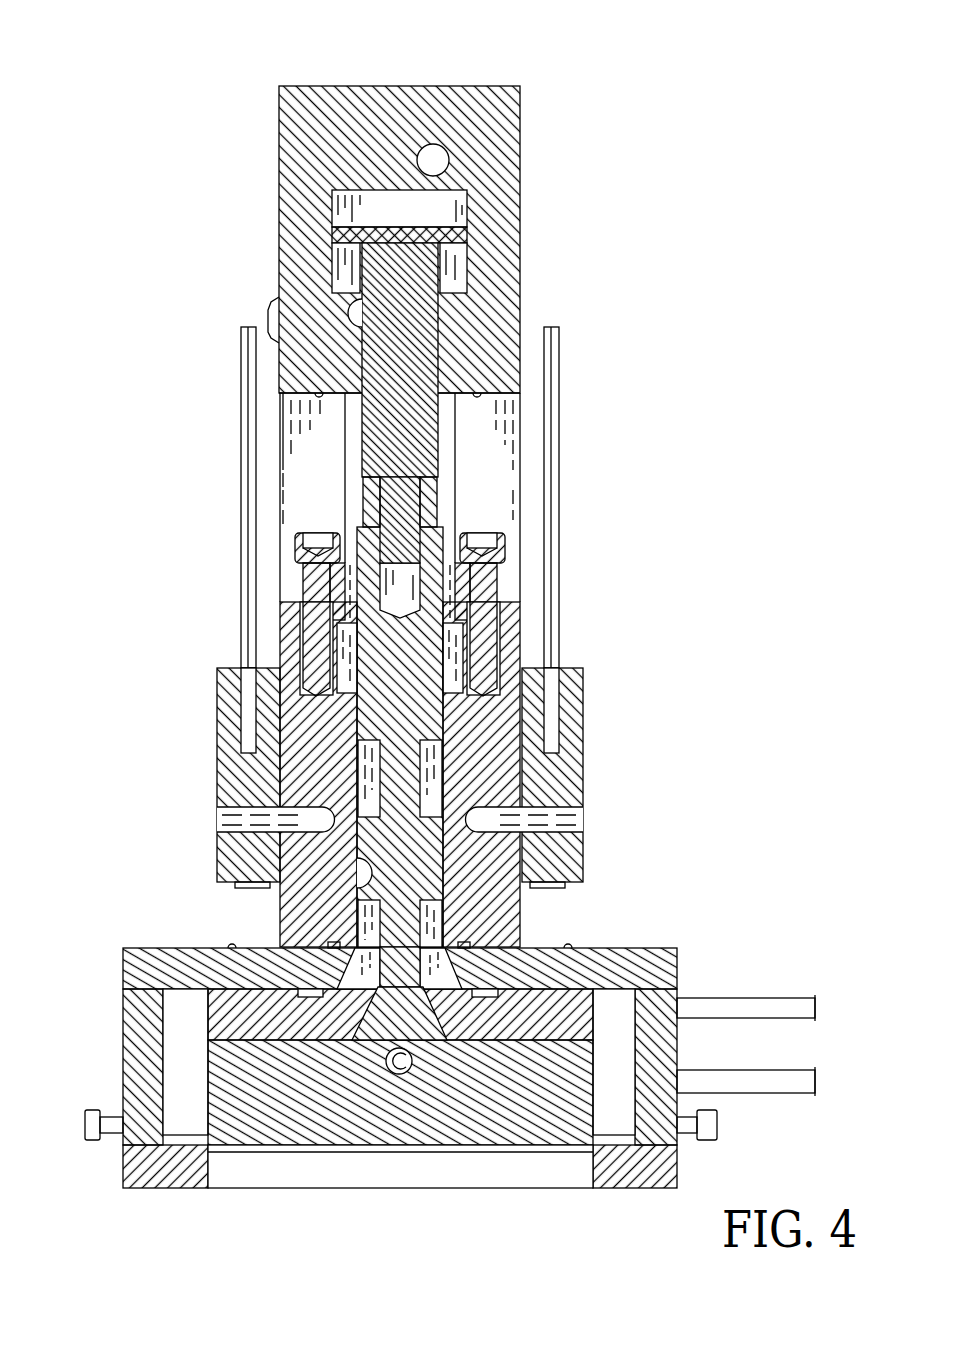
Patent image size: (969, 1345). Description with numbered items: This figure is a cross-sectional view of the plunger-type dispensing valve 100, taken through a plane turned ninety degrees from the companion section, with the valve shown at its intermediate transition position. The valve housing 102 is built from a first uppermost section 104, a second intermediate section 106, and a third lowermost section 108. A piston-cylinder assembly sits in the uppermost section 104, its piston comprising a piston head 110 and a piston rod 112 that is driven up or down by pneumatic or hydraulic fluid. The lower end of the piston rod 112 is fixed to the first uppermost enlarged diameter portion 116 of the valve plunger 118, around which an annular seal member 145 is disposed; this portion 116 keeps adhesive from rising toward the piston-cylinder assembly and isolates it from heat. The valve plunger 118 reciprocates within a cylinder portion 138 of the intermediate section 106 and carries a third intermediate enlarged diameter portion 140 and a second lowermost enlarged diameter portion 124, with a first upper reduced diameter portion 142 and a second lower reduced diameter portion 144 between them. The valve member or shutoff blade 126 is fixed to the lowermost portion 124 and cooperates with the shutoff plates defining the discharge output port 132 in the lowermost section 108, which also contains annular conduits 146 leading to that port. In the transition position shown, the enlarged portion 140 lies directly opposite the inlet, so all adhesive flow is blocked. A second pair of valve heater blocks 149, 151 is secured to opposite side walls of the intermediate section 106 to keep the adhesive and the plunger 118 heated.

The plunger-type dispensing valve 100 is at (670, 204).
The valve housing 102 is at (280, 491).
The first uppermost section 104 is at (418, 114).
The second intermediate section 106 is at (297, 764).
The third lowermost section 108 is at (665, 1043).
The piston head 110 is at (357, 229).
The piston rod 112 is at (412, 367).
The first uppermost enlarged diameter portion 116 is at (416, 686).
The valve plunger 118 is at (432, 508).
The second lowermost enlarged diameter portion 124 is at (387, 1017).
The valve member or shutoff blade 126 is at (428, 1118).
The adhesive material dispensing or discharge output port 132 is at (388, 1178).
The cylinder portion 138 is at (357, 857).
The third intermediate enlarged diameter portion 140 is at (408, 869).
The first upper annularly configured reduced diameter portion 142 is at (410, 777).
The second lower annularly configured reduced diameter portion 144 is at (410, 969).
The annular seal member 145 is at (343, 672).
The annular conduits 146 is at (187, 1045).
The valve heater block 149 is at (229, 704).
The valve heater block 151 is at (563, 777).